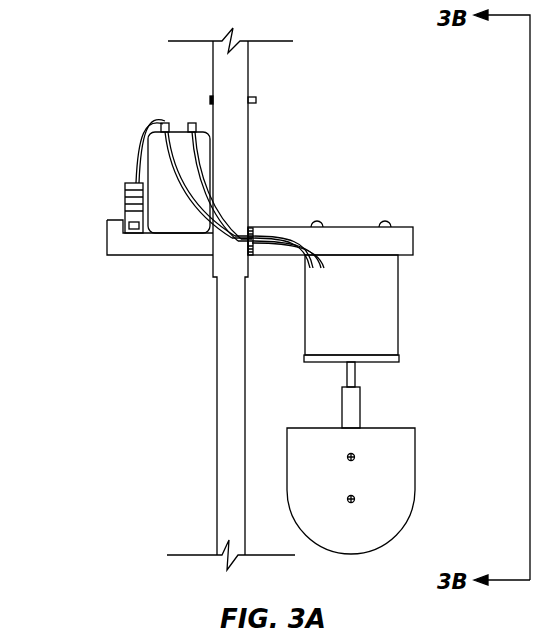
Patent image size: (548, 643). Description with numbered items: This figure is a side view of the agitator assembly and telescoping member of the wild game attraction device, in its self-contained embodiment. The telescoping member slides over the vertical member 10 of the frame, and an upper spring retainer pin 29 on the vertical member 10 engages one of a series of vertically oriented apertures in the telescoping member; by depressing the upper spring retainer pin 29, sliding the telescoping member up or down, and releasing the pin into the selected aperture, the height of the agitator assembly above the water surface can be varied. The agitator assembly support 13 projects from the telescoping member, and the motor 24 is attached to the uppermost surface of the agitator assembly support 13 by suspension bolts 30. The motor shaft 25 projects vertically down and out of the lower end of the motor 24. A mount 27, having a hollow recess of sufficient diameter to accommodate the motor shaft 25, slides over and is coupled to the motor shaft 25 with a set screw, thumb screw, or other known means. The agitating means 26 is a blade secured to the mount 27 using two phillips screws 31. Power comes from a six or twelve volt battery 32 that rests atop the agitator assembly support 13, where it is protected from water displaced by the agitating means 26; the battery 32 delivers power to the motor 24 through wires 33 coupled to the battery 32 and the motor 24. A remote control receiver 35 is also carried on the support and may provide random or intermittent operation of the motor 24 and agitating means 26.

The vertical member 10 is at (217, 395).
The agitator assembly support 13 is at (107, 240).
The motor 24 is at (398, 297).
The motor shaft 25 is at (357, 368).
The agitating means 26 is at (417, 463).
The mount 27 is at (342, 412).
The upper spring retainer pin 29 is at (256, 100).
The suspension bolts 30 is at (317, 222).
The phillips screws 31 is at (355, 457).
The battery 32 is at (145, 142).
The wires 33 is at (205, 240).
The remote control receiver 35 is at (125, 190).